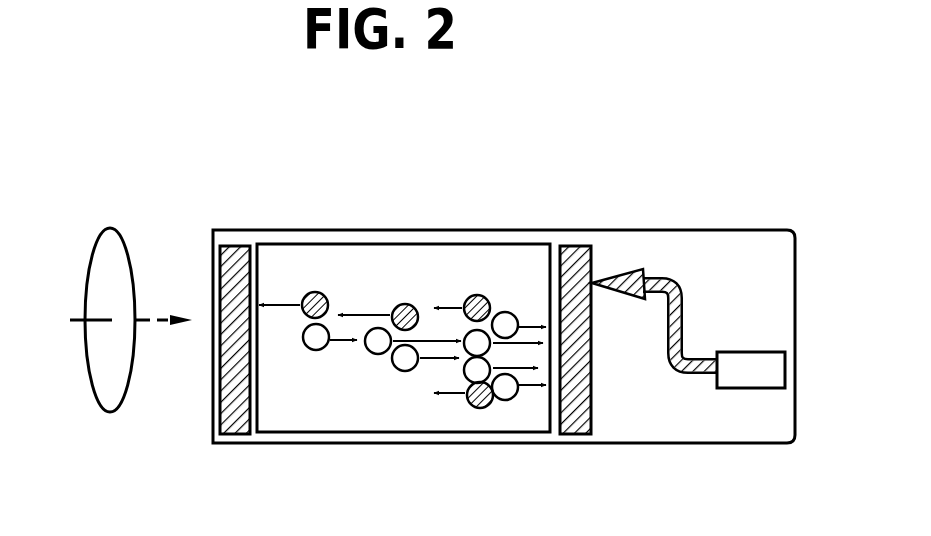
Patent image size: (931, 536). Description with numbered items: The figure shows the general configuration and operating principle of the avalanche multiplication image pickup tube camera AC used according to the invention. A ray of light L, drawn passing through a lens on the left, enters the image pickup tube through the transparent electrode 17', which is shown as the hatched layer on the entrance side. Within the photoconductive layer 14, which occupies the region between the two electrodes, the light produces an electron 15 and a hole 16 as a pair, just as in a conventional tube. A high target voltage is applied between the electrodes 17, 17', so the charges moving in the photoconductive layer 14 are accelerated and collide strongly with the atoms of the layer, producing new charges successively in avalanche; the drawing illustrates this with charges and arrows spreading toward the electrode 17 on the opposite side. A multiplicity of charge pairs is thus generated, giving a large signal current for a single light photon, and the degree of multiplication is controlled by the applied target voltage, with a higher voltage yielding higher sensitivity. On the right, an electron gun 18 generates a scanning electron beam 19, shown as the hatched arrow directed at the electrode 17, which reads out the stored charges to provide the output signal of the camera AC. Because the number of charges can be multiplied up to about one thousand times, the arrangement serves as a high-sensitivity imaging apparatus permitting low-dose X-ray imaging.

The photoconductive layer 14 is at (557, 459).
The electron 15 is at (313, 292).
The hole 16 is at (327, 327).
The electrode 17 is at (613, 300).
The transparent electrode 17' is at (223, 284).
The electron gun 18 is at (762, 352).
The scanning electron beam 19 is at (686, 278).
The avalanche multiplication image pickup tube camera AC is at (543, 218).
The ray of light L is at (113, 320).